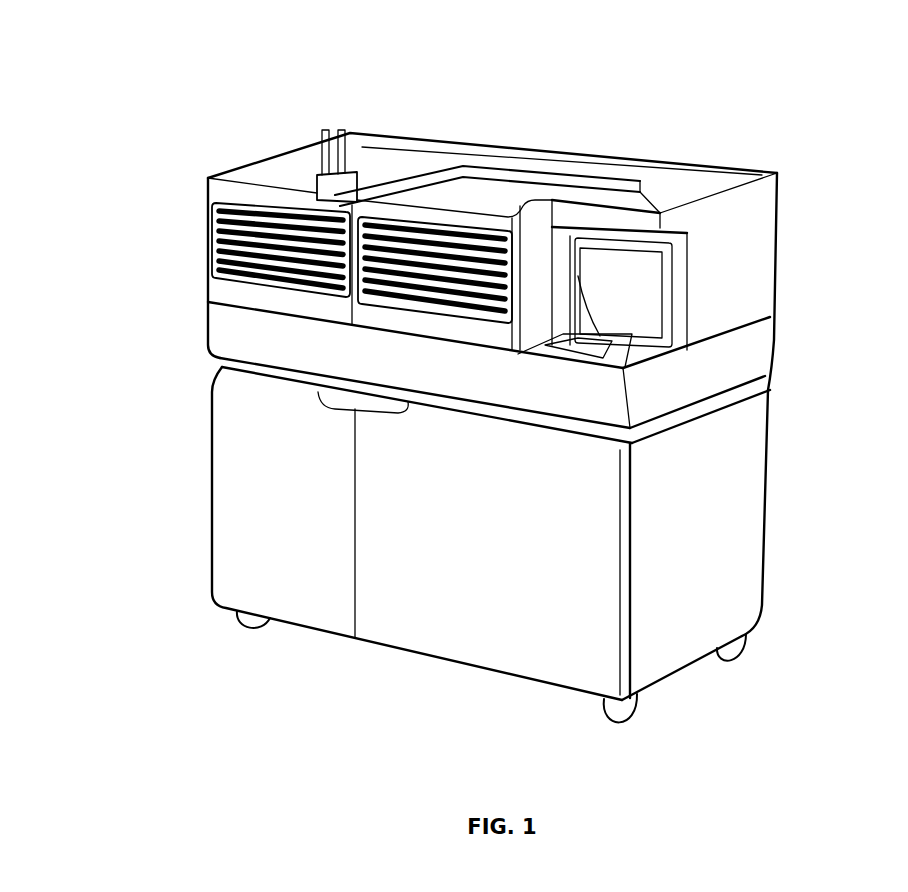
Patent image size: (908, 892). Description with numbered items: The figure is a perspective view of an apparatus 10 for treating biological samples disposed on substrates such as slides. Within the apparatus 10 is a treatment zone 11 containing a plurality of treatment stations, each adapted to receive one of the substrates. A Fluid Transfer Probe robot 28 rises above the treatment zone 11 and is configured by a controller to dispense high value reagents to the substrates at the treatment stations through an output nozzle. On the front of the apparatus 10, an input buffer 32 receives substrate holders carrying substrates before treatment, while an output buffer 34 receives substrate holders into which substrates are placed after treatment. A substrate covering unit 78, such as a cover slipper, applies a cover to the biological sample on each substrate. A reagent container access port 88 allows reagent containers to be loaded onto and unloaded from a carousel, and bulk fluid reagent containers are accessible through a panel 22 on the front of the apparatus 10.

The apparatus 10 is at (791, 155).
The treatment zone 11 is at (473, 187).
The panel 22 is at (458, 567).
The Fluid Transfer Probe robot 28 is at (354, 156).
The input buffer 32 is at (207, 270).
The output buffer 34 is at (320, 292).
The substrate covering unit 78 is at (720, 273).
The reagent container access port 88 is at (632, 327).